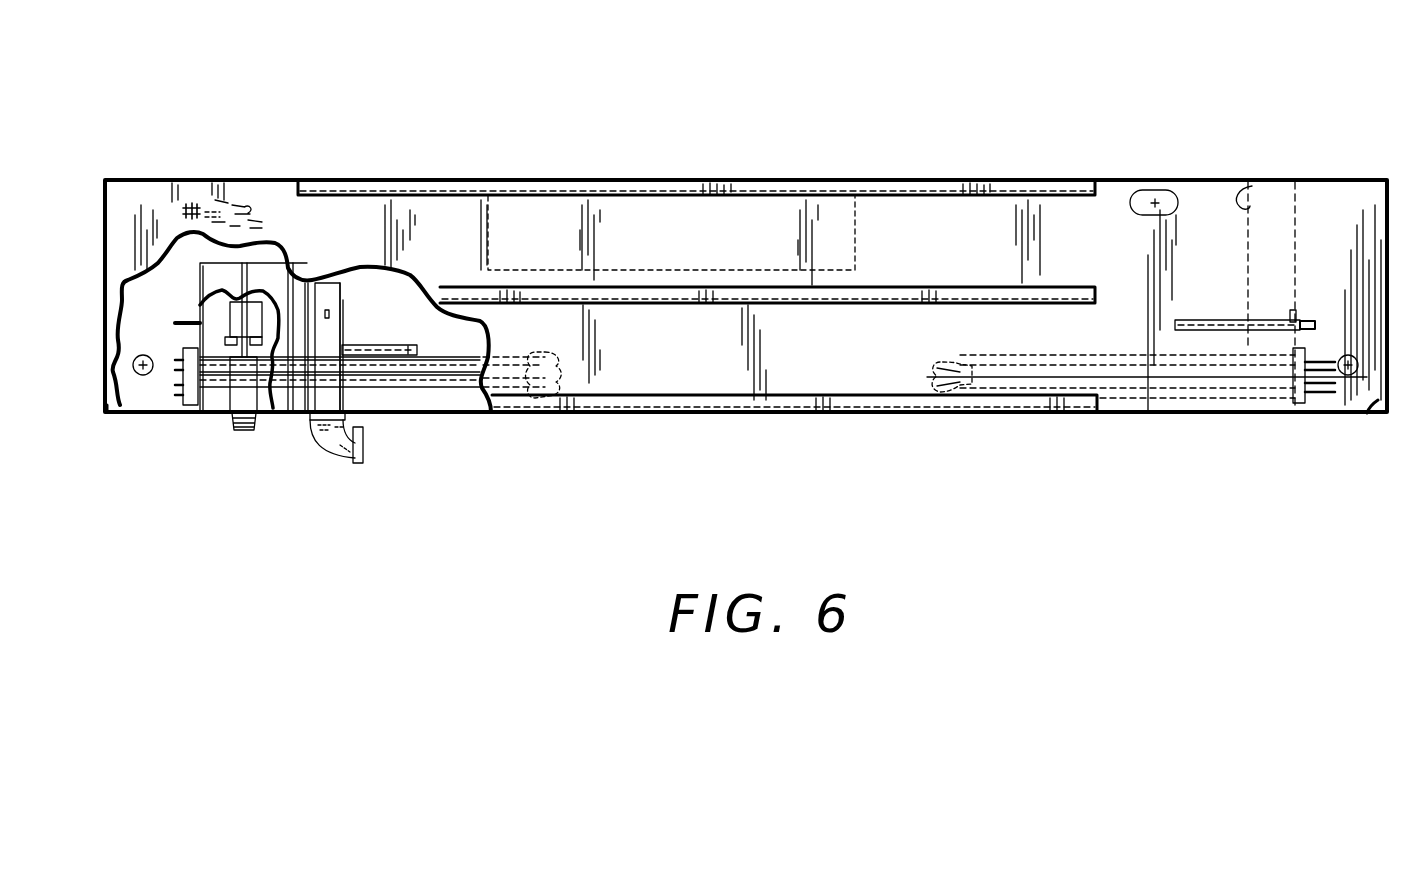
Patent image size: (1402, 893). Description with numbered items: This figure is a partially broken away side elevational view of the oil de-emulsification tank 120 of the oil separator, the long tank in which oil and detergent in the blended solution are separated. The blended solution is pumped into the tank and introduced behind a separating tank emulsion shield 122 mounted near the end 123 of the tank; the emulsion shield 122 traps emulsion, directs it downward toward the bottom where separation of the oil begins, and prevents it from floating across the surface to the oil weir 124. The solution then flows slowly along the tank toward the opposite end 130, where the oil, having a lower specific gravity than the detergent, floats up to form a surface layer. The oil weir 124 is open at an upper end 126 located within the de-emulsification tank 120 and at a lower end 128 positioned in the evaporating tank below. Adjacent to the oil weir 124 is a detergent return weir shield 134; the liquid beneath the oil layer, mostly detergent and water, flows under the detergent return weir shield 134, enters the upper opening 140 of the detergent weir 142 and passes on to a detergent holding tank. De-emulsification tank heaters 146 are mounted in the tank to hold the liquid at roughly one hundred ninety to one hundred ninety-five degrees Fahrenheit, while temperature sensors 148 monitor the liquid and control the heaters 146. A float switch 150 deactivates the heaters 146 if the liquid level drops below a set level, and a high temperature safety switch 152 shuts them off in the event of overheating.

The oil de-emulsification tank 120 is at (1005, 212).
The separating tank emulsion shield 122 is at (1238, 188).
The end 123 is at (1378, 402).
The oil weir 124 is at (343, 290).
The upper end 126 is at (327, 283).
The lower end 128 is at (364, 452).
The end 130 is at (104, 412).
The detergent return weir shield 134 is at (306, 285).
The upper opening 140 is at (200, 265).
The detergent weir 142 is at (290, 272).
The de-emulsification tank heaters 146 is at (525, 362).
The temperature sensors 148 is at (1213, 320).
The float switch 150 is at (276, 228).
The high temperature safety switch 152 is at (408, 345).